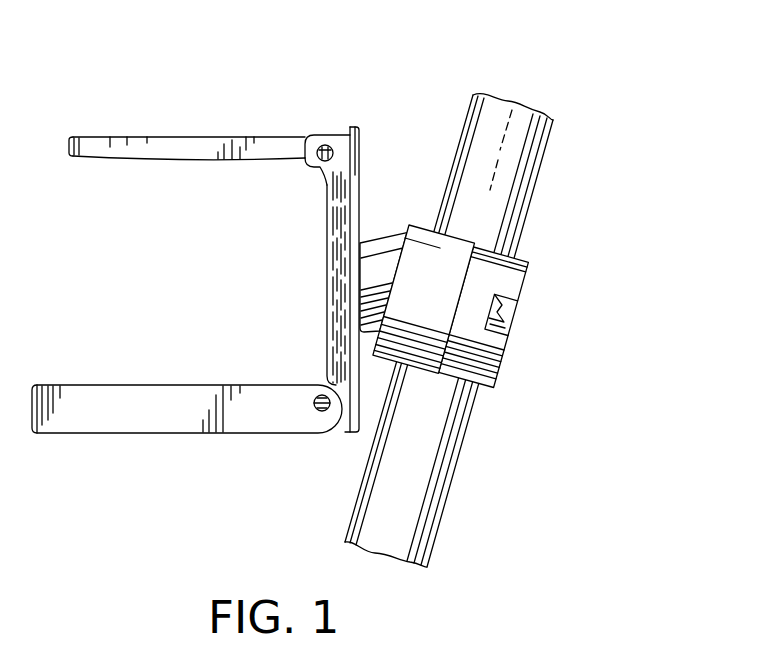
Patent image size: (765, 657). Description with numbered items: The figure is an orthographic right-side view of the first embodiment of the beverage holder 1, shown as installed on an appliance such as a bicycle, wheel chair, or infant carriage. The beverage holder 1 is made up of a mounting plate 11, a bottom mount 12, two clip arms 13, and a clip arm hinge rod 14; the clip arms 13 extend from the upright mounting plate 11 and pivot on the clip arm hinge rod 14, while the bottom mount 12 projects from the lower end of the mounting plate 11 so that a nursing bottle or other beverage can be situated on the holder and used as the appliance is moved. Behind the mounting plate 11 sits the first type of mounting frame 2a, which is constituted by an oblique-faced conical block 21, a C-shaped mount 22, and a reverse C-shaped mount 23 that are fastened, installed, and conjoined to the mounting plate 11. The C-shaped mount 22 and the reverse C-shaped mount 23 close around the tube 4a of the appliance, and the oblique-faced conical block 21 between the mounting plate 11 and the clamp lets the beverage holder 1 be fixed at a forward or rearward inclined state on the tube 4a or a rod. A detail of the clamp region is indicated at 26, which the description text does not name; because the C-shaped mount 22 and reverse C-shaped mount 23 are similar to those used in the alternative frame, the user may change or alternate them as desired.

The beverage holder 1 is at (238, 269).
The mounting plate 11 is at (366, 143).
The bottom mount 12 is at (200, 436).
The clip arms 13 is at (195, 137).
The clip arm hinge rod 14 is at (312, 170).
The oblique-faced conical block 21 is at (383, 231).
The C-shaped mount 22 is at (468, 232).
The reverse C-shaped mount 23 is at (523, 295).
The locking notch 26 is at (520, 318).
The first type of mounting frame 2a is at (501, 265).
The tube 4a is at (530, 219).